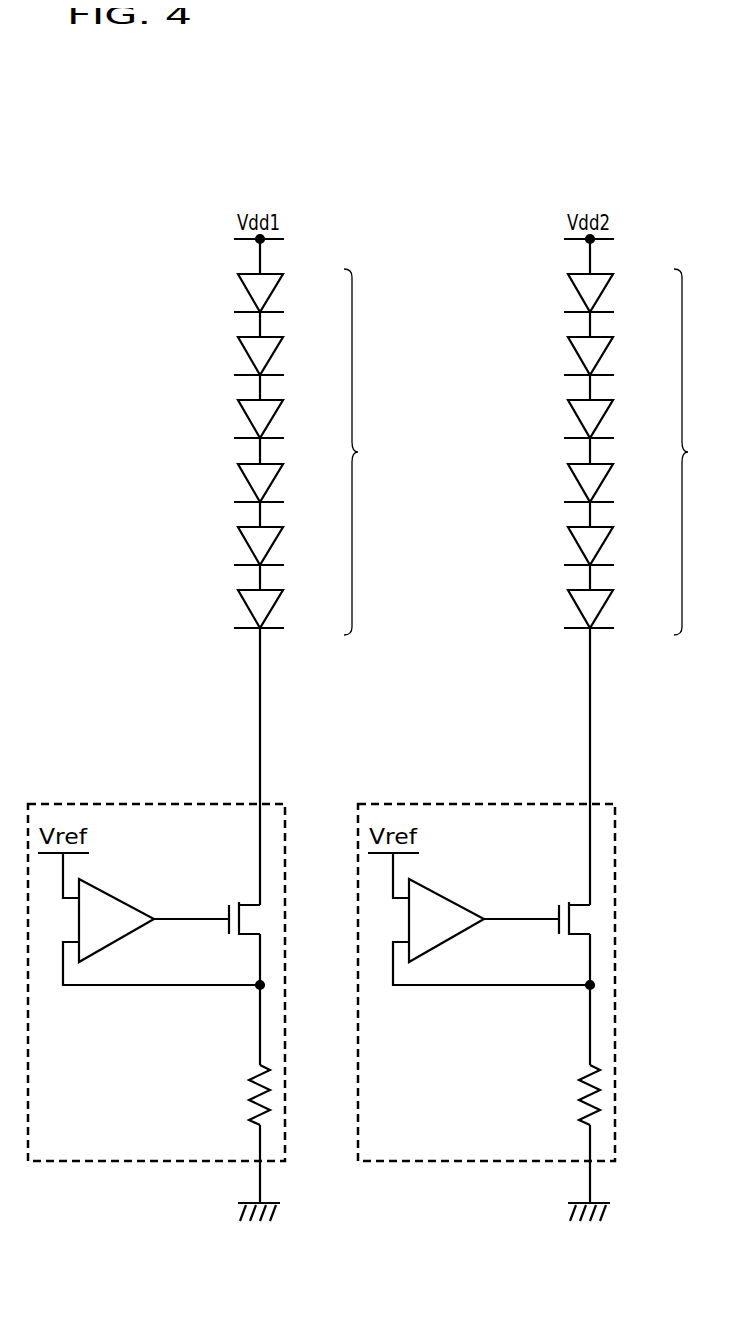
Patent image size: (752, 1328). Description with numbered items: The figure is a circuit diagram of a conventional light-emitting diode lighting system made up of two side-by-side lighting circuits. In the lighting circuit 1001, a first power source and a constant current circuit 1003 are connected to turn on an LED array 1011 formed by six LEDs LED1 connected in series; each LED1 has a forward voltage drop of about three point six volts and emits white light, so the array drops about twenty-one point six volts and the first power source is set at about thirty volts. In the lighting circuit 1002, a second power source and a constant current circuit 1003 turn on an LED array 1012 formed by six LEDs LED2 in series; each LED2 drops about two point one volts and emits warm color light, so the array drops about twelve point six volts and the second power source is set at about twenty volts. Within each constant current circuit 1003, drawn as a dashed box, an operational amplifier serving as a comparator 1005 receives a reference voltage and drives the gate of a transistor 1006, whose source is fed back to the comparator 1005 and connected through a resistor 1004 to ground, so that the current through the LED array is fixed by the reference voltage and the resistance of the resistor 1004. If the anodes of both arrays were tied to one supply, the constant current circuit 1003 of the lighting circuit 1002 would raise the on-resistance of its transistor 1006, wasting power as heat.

The lighting circuit 1001 is at (189, 334).
The lighting circuit 1002 is at (519, 334).
The constant current circuit 1003 is at (155, 800).
The resistor 1004 is at (252, 1072).
The comparator 1005 is at (117, 898).
The transistor 1006 is at (241, 900).
The LED array 1011 is at (375, 452).
The LED array 1012 is at (705, 452).
The LED LED1 is at (269, 292).
The LED LED2 is at (599, 292).